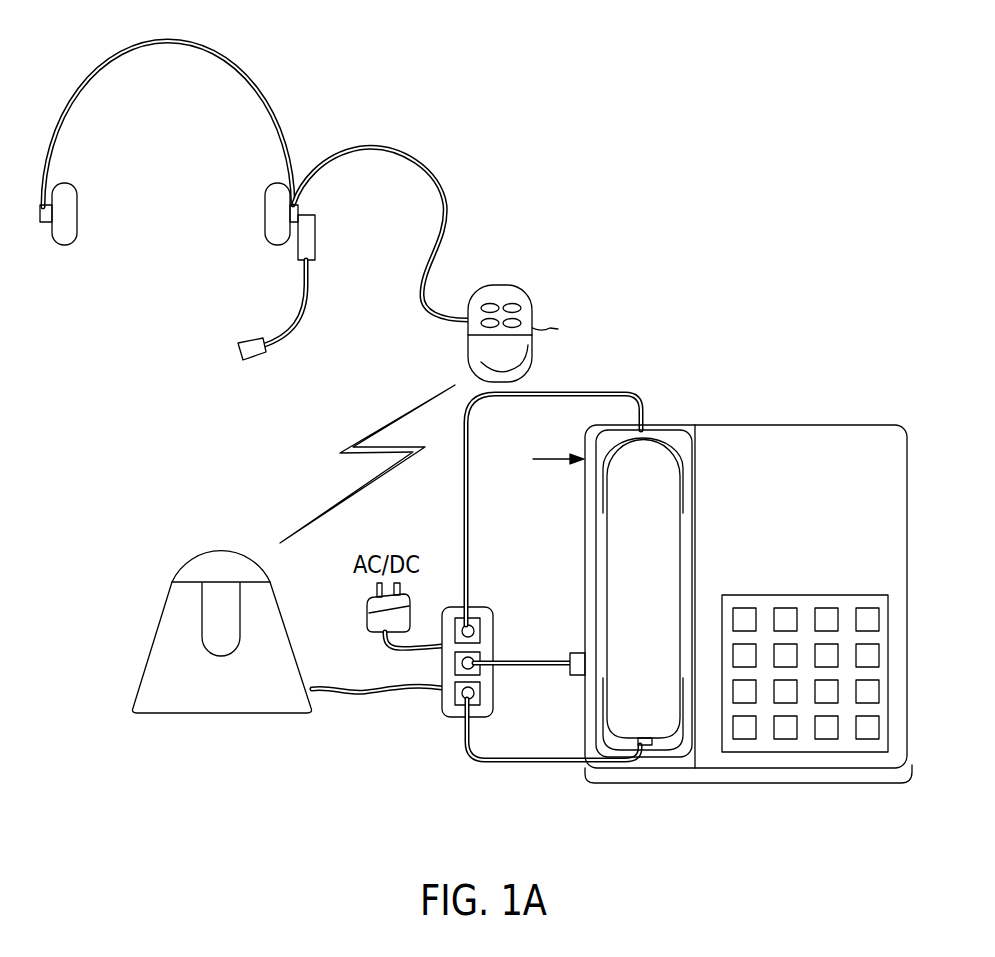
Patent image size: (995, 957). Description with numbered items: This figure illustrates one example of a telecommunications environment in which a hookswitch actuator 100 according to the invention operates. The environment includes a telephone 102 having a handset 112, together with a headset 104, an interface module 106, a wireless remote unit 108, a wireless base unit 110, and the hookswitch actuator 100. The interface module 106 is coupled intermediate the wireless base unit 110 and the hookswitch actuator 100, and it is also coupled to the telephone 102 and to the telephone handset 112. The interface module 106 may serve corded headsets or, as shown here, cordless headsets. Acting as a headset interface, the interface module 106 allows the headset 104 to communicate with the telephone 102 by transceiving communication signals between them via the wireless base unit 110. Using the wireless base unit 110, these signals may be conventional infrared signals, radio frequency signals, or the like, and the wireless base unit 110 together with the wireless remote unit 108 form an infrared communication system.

The hookswitch actuator 100 is at (672, 442).
The telephone 102 is at (815, 544).
The headset 104 is at (112, 52).
The interface module 106 is at (493, 697).
The wireless remote unit 108 is at (487, 294).
The wireless base unit 110 is at (208, 562).
The handset 112 is at (662, 590).